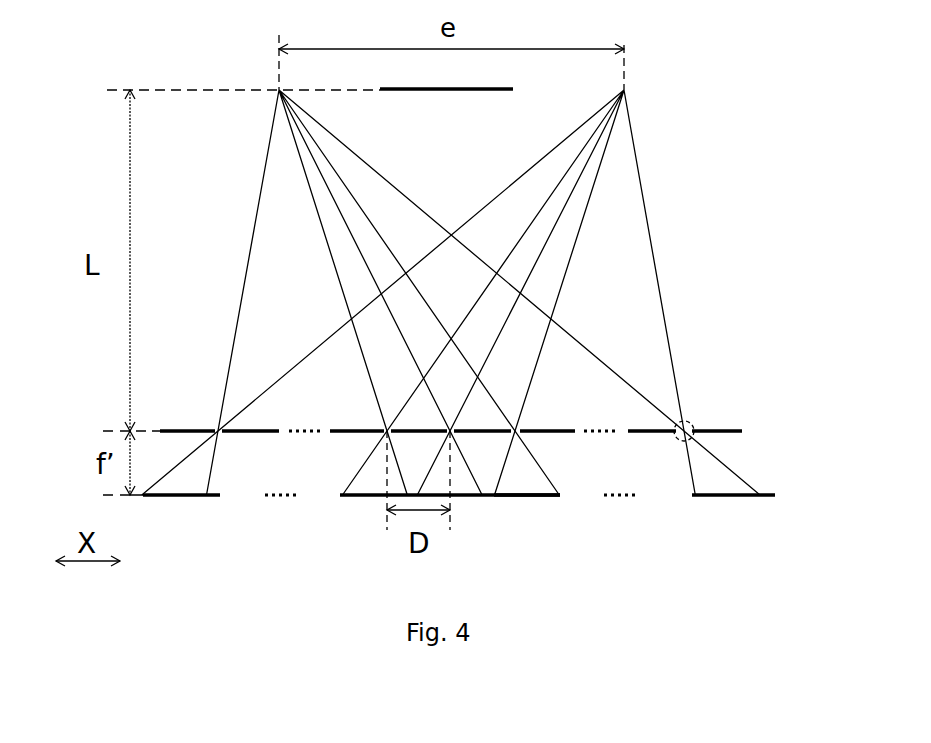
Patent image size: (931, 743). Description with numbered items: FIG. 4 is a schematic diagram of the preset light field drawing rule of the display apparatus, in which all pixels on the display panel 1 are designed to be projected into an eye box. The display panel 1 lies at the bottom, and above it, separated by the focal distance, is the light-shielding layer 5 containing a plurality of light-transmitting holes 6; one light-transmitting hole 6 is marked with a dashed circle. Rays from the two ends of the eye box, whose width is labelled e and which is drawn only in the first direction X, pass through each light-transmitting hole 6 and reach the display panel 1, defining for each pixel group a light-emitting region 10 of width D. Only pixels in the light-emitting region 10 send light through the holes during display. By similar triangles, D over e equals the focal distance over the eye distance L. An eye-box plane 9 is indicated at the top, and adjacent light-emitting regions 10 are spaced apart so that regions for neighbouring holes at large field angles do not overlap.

The light source / emitter plane 9 is at (505, 89).
The light-shielding layer 5 is at (735, 431).
The light-transmitting hole 6 is at (692, 421).
The display panel 1 is at (770, 495).
The light-emitting region 10 is at (559, 498).